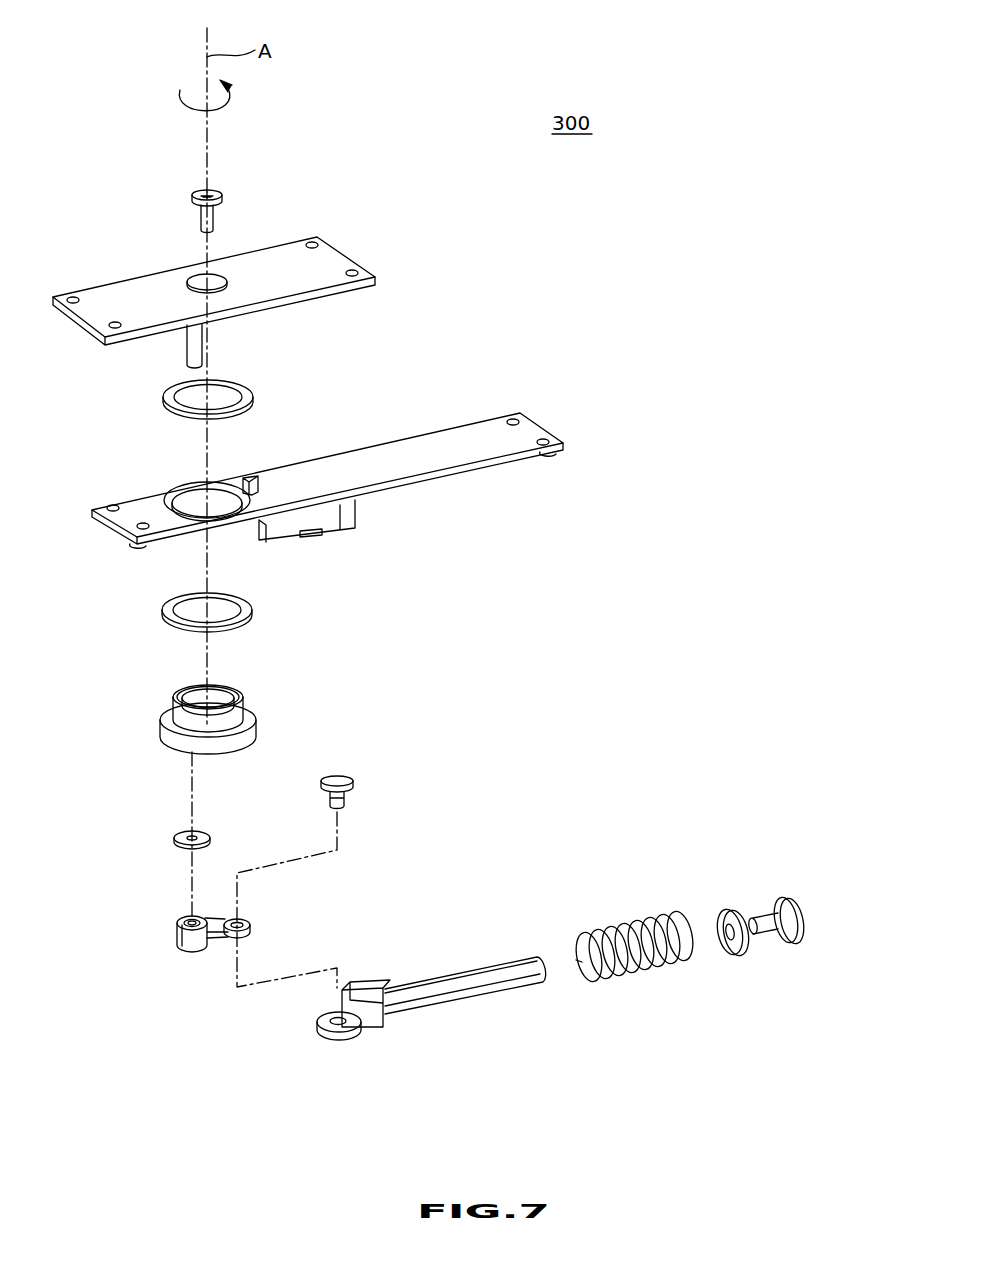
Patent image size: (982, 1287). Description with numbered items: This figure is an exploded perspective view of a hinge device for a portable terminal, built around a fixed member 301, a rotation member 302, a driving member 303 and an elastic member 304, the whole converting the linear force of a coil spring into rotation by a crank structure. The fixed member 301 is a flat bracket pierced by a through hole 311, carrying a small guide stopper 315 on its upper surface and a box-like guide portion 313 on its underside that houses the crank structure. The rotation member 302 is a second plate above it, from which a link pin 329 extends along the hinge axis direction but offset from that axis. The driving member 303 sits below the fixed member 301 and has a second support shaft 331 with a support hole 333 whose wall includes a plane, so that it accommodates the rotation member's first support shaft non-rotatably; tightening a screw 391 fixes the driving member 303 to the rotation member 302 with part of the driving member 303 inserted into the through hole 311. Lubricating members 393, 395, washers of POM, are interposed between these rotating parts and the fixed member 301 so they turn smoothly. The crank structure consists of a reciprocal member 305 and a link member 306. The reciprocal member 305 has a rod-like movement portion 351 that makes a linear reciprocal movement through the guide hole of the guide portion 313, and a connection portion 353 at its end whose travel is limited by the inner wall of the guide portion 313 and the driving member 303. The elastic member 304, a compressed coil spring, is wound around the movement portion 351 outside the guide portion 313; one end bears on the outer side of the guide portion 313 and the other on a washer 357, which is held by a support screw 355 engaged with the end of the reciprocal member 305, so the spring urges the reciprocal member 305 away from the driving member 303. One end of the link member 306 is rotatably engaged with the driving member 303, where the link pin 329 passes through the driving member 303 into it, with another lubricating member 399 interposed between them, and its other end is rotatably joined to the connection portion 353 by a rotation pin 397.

The fixed member 301 is at (367, 485).
The rotation member 302 is at (368, 250).
The driving member 303 is at (223, 703).
The elastic member 304 is at (627, 912).
The reciprocal member 305 is at (400, 990).
The link member 306 is at (168, 932).
The through hole 311 is at (195, 502).
The guide portion 313 is at (335, 520).
The guide stopper 315 is at (252, 480).
The link pin 329 is at (188, 353).
The second support shaft 331 is at (225, 693).
The support hole 333 is at (195, 697).
The movement portion 351 is at (472, 978).
The connection portion 353 is at (325, 1028).
The support screw 355 is at (778, 900).
The washer 357 is at (722, 918).
The screw 391 is at (220, 191).
The lubricating member 393 is at (233, 384).
The lubricating member 395 is at (250, 609).
The rotation pin 397 is at (345, 778).
The lubricating member 399 is at (175, 838).